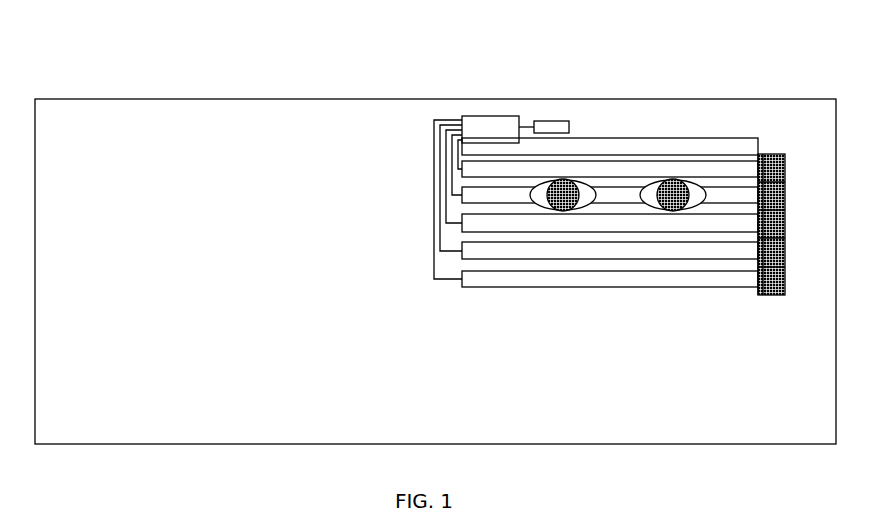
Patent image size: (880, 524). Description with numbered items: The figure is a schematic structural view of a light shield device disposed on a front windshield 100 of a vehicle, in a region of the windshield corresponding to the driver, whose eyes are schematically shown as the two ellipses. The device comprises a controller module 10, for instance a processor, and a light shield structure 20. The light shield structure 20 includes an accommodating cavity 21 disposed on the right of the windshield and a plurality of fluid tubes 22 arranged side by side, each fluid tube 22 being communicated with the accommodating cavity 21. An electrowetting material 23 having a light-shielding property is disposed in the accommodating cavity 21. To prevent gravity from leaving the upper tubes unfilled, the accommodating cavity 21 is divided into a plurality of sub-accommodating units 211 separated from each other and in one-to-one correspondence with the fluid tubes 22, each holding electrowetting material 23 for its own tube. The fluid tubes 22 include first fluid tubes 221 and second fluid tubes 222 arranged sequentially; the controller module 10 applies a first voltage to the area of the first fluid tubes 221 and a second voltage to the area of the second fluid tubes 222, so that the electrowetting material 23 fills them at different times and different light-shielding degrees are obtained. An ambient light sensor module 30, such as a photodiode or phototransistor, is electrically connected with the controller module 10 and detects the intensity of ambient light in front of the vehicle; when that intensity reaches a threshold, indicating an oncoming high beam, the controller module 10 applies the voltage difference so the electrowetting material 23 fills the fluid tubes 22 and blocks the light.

The front windshield 100 is at (333, 120).
The controller module 10 is at (490, 127).
The ambient light sensor module 30 is at (558, 127).
The light shield structure 20 is at (648, 176).
The fluid tube 22 is at (610, 193).
The first fluid tubes 221 is at (502, 282).
The second fluid tubes 222 is at (591, 255).
The electrowetting material 23 is at (765, 156).
The accommodating cavity 21 is at (783, 156).
The sub-accommodating unit 211 is at (789, 154).